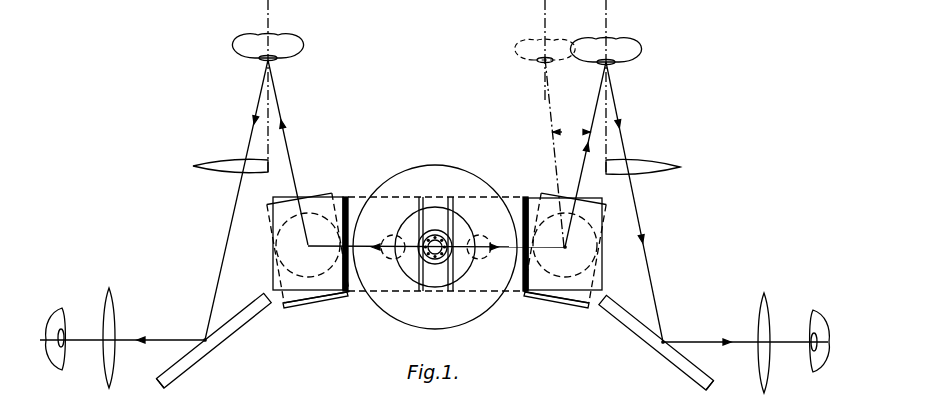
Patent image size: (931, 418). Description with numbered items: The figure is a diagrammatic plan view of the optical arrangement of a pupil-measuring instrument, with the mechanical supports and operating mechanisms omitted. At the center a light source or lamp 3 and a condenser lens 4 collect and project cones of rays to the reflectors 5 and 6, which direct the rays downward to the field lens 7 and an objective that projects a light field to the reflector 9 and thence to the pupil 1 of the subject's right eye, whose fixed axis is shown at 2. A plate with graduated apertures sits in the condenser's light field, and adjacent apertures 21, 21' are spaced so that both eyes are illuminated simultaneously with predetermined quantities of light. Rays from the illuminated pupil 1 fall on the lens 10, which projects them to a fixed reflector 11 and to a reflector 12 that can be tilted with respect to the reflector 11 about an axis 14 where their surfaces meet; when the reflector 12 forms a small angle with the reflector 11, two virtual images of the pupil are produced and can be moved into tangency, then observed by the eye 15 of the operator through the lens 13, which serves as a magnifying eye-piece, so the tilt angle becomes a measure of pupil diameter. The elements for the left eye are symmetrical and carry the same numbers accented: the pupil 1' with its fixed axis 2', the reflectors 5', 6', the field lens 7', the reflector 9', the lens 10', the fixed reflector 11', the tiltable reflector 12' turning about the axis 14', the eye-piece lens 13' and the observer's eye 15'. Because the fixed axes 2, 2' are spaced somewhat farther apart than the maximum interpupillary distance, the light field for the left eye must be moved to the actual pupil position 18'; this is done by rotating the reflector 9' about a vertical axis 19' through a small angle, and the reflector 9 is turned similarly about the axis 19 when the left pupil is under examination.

The pupil of the right eye 1 is at (264, 61).
The axis of the pupil 2 is at (282, 86).
The light source 3 is at (441, 212).
The condenser lens 4 is at (428, 165).
The reflector 5 is at (362, 218).
The reflector 6 is at (309, 219).
The field lens 7 is at (308, 255).
The reflector 9 is at (312, 308).
The lens 10 is at (224, 150).
The fixed reflector 11 is at (214, 333).
The reflector 12 is at (146, 390).
The lens 13 is at (97, 345).
The axis 14 is at (193, 325).
The eye of the observer 15 is at (67, 324).
The vertical axis 19 is at (404, 253).
The aperture 21 is at (375, 283).
The pupil of the left eye 1' is at (610, 62).
The axis of the pupil 2' is at (588, 87).
The reflector 5' is at (515, 219).
The reflector 6' is at (565, 219).
The field lens 7' is at (565, 262).
The reflector 9' is at (562, 313).
The lens 10' is at (658, 155).
The fixed reflector 11' is at (656, 333).
The reflector 12' is at (729, 387).
The lens 13' is at (778, 349).
The axis 14' is at (688, 326).
The eye of the observer 15' is at (808, 325).
The pupil axis position 18' is at (542, 123).
The vertical axis 19' is at (601, 254).
The aperture 21' is at (494, 283).